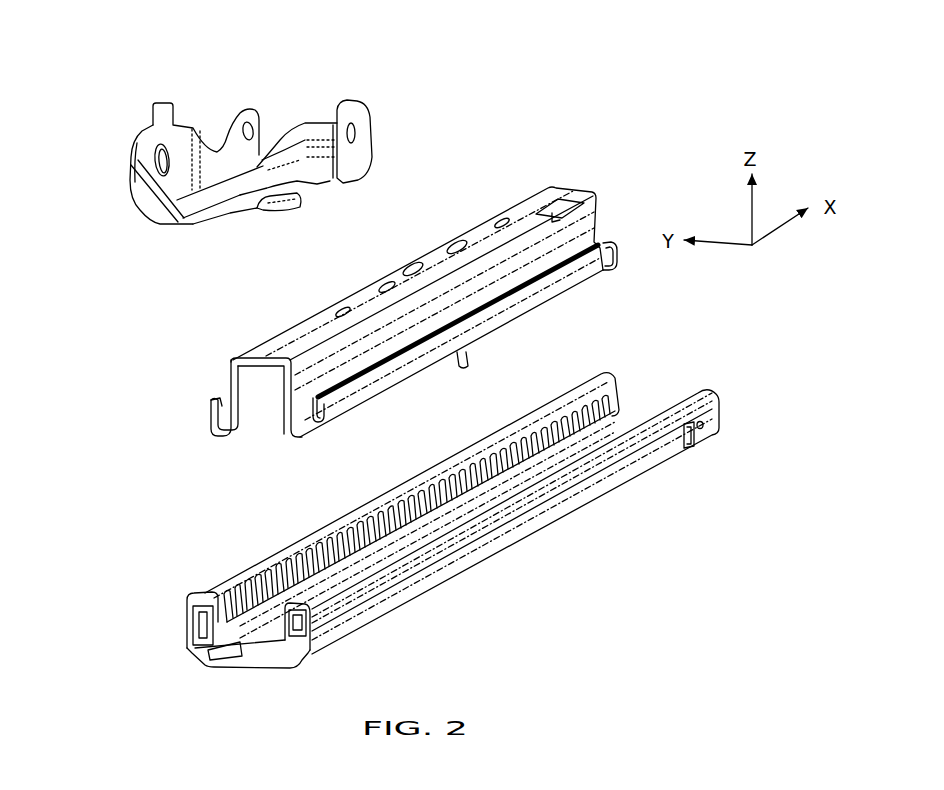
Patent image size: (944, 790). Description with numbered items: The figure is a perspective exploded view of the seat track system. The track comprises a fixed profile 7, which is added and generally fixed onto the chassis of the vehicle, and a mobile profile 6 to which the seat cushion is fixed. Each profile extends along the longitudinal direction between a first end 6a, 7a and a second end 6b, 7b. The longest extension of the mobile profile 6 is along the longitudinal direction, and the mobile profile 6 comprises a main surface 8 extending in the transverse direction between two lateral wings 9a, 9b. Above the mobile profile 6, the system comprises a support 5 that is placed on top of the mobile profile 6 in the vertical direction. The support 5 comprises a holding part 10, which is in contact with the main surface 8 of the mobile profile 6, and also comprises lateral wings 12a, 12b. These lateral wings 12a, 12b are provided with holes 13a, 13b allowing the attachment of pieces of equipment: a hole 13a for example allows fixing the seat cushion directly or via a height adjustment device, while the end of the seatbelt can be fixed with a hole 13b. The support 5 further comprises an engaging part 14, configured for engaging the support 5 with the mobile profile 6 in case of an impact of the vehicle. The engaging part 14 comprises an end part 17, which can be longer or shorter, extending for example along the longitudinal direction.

The support 5 is at (292, 82).
The mobile profile 6 is at (413, 392).
The first end 6a is at (206, 450).
The second end 6b is at (602, 168).
The fixed profile 7 is at (485, 580).
The first end 7a is at (178, 674).
The second end 7b is at (702, 358).
The main surface 8 is at (363, 290).
The lateral wing 9a is at (303, 383).
The lateral wing 9b is at (229, 378).
The holding part 10 is at (284, 158).
The lateral wing 12a is at (352, 147).
The lateral wing 12b is at (150, 130).
The hole 13a is at (354, 135).
The hole 13b is at (158, 162).
The engaging part 14 is at (258, 216).
The end part 17 is at (296, 208).